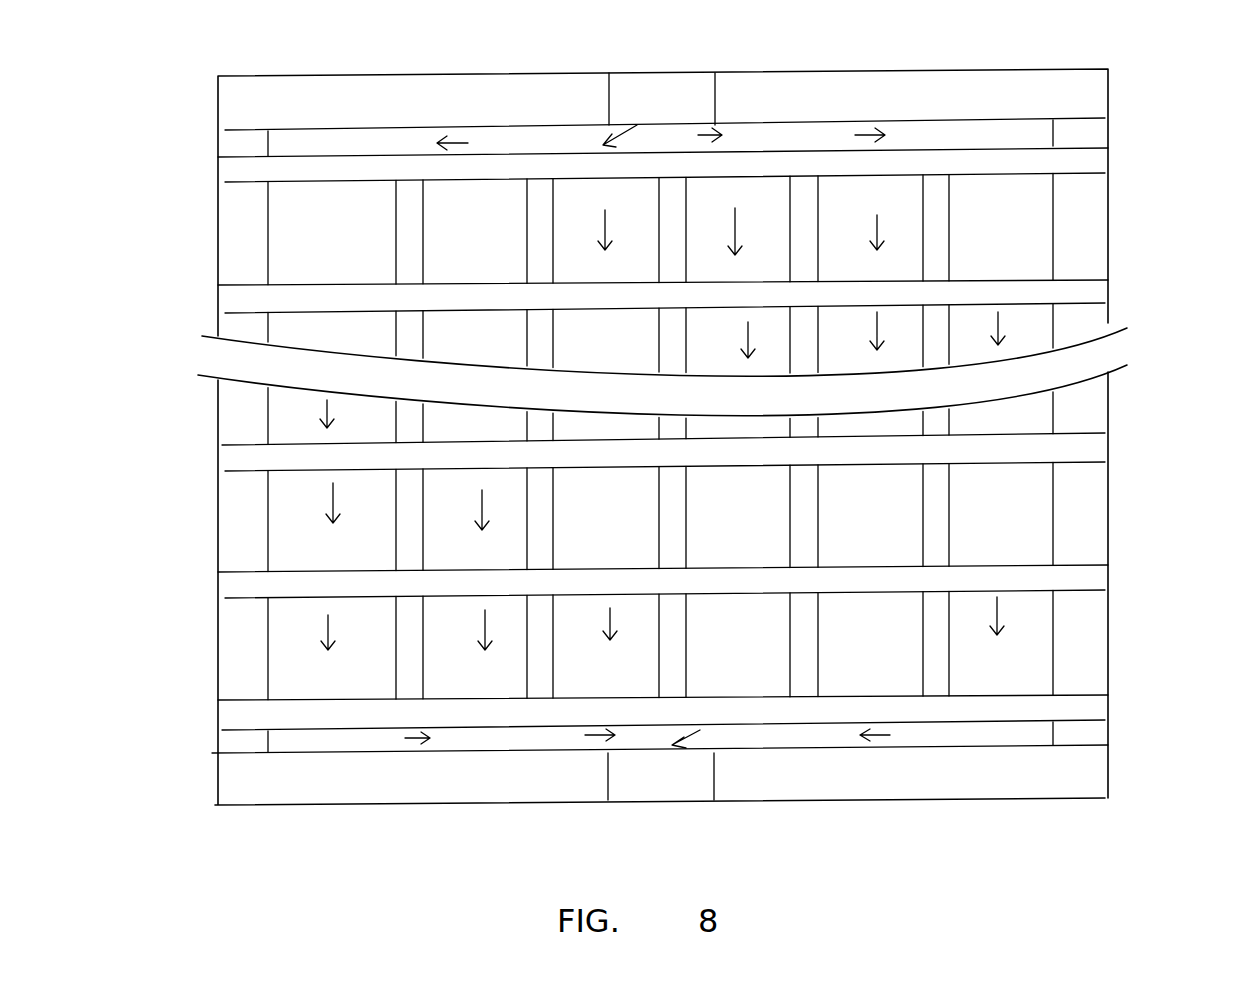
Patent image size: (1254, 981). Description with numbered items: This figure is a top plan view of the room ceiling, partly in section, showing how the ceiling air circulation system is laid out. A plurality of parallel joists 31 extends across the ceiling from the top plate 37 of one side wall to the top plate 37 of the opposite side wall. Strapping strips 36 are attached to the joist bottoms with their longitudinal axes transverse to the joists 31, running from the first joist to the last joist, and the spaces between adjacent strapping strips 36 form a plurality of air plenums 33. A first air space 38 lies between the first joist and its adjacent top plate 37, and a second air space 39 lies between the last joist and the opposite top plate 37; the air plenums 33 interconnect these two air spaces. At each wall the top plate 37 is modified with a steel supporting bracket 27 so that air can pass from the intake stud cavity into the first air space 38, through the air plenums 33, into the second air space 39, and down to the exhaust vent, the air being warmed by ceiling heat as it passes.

The steel supporting bracket 27 is at (662, 90).
The joist 31 is at (1078, 160).
The air plenum 33 is at (340, 252).
The strapping strip 36 is at (411, 255).
The top plate 37 is at (392, 90).
The first air space 38 is at (970, 132).
The second air space 39 is at (1028, 735).